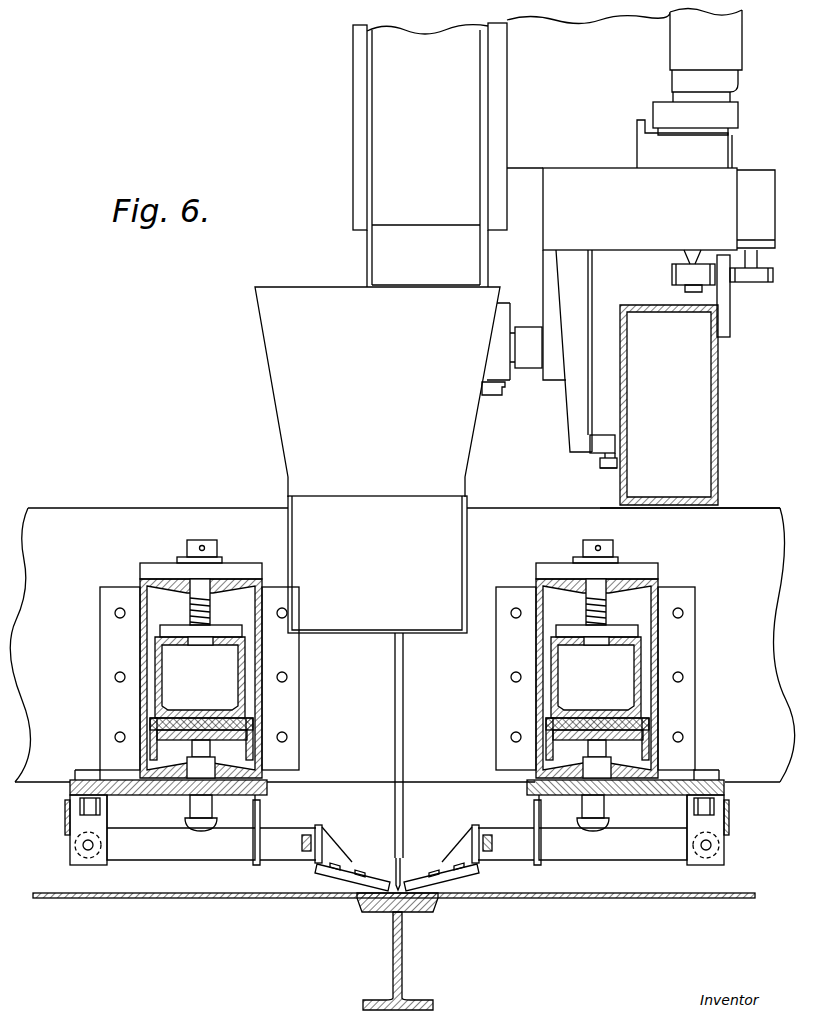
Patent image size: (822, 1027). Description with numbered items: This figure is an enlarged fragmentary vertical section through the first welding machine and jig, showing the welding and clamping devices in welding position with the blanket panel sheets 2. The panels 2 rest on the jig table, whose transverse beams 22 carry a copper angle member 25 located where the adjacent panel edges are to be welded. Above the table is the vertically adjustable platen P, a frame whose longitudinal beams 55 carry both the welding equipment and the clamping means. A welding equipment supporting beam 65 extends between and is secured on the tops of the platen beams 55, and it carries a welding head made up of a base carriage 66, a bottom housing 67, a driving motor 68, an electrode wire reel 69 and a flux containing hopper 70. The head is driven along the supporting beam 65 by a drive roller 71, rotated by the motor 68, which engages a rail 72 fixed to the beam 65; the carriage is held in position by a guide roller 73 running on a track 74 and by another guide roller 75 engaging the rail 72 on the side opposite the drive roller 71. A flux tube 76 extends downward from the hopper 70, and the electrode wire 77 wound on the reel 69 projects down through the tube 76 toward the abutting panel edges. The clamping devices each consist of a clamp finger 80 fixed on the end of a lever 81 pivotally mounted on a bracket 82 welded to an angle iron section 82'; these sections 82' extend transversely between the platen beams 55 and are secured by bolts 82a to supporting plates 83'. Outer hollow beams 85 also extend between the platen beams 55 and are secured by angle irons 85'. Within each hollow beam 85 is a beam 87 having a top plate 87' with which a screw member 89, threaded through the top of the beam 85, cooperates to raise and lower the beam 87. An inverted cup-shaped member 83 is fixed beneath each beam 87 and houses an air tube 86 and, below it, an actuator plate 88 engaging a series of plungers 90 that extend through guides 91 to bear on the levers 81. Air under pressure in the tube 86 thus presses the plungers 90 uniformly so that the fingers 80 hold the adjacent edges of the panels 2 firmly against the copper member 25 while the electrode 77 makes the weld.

The blanket panel sheets 2 is at (296, 898).
The transverse beams 22 is at (404, 988).
The angle member 25 is at (440, 908).
The longitudinal beams 55 is at (754, 512).
The welding equipment supporting beam 65 is at (718, 455).
The base carriage 66 is at (531, 170).
The bottom housing 67 is at (590, 172).
The driving motor 68 is at (735, 42).
The electrode wire reel 69 is at (353, 137).
The flux containing hopper 70 is at (288, 292).
The drive roller 71 is at (672, 273).
The rail 72 is at (731, 320).
The guide roller 73 is at (600, 466).
The track 74 is at (612, 470).
The guide roller 75 is at (757, 282).
The flux tube 76 is at (403, 713).
The electrode wire 77 is at (367, 268).
The clamp finger 80 is at (316, 874).
The lever 81 is at (227, 852).
The bracket 82 is at (400, 830).
The angle iron section 82' is at (403, 818).
The bolts 82a is at (74, 776).
The inverted cup-shaped member 83 is at (438, 738).
The supporting plates 83' is at (399, 766).
The outer hollow beams 85 is at (398, 659).
The angle irons 85' is at (399, 678).
The air tube 86 is at (253, 724).
The beam 87 is at (398, 677).
The top plate 87' is at (399, 618).
The actuator plate 88 is at (212, 745).
The screw member 89 is at (190, 612).
The plungers 90 is at (188, 810).
The guides 91 is at (212, 800).
The platen P is at (104, 522).